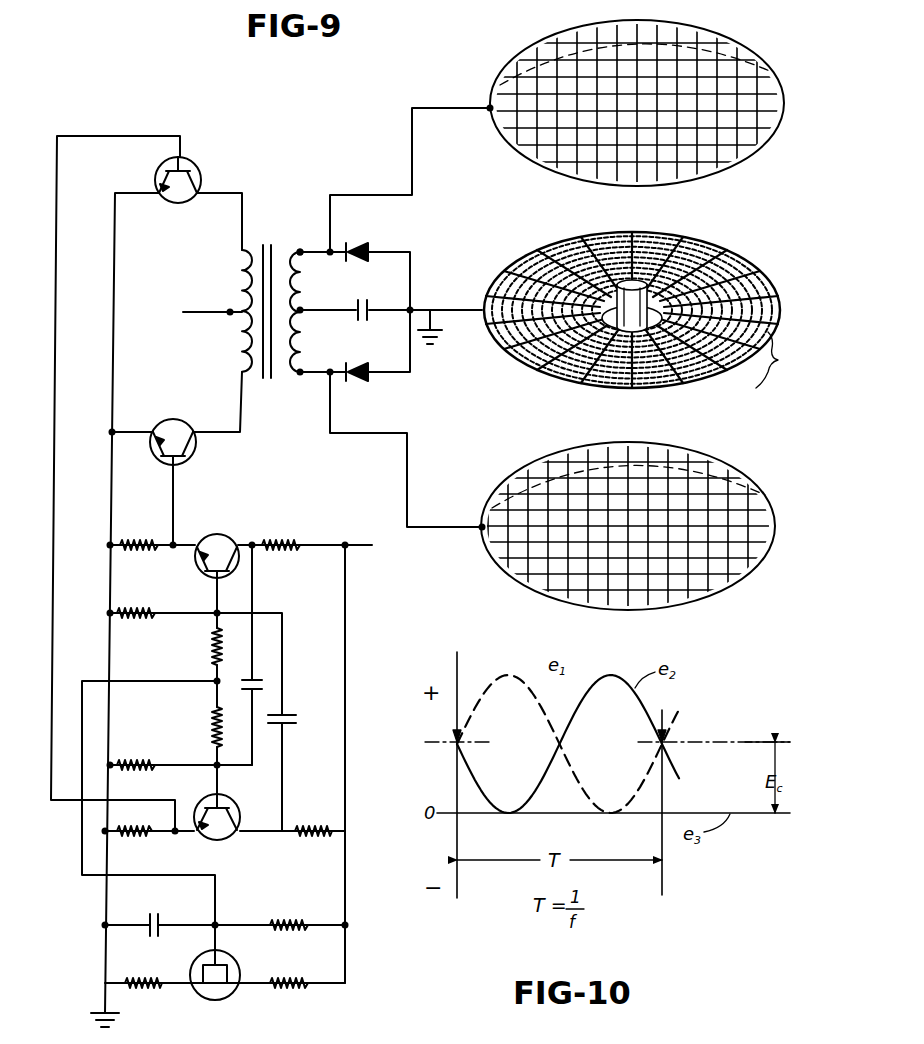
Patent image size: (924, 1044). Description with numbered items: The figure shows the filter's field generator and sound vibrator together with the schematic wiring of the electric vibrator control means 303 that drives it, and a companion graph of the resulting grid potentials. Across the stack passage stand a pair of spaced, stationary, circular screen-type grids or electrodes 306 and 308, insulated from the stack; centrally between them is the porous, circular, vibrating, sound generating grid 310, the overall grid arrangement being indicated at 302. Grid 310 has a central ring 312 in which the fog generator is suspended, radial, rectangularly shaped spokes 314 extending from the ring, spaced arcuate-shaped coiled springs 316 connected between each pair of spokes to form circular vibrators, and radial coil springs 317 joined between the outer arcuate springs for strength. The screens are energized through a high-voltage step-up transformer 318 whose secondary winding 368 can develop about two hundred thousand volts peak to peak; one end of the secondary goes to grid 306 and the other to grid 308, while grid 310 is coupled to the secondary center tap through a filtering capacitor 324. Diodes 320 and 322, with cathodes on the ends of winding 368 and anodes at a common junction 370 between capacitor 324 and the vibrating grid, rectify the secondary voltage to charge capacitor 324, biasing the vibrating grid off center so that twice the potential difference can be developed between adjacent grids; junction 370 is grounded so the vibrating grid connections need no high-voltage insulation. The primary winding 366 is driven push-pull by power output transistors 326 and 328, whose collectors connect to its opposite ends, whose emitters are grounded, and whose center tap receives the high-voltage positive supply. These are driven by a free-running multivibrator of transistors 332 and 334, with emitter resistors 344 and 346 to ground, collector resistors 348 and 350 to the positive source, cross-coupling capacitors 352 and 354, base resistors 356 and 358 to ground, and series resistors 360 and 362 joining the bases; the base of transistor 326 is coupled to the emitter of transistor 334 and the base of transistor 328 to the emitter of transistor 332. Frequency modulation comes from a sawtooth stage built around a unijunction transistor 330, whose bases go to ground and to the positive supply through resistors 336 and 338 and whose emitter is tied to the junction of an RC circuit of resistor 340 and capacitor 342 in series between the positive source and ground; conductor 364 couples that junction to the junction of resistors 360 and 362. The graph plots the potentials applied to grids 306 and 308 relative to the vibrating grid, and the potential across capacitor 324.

The electrode assembly 302 is at (789, 173).
The electric vibrator control means 303 is at (290, 178).
The stationary outer screen-type grid 306 is at (713, 32).
The stationary outer screen-type grid 308 is at (720, 458).
The vibrating sound generating grid 310 is at (651, 310).
The central ring 312 is at (690, 252).
The radial spokes 314 is at (530, 266).
The arcuate-shaped coiled springs 316 is at (778, 360).
The radial coil springs 317 is at (572, 378).
The transformer 318 is at (292, 248).
The diode 320 is at (368, 243).
The diode 322 is at (351, 388).
The filtering capacitor 324 is at (357, 308).
The push-pull transistor 326 is at (196, 450).
The push-pull transistor 328 is at (200, 178).
The unijunction transistor 330 is at (220, 1000).
The NPN transistor 332 is at (240, 810).
The NPN transistor 334 is at (239, 560).
The resistor 336 is at (174, 972).
The resistor 338 is at (312, 972).
The resistor 340 is at (320, 916).
The capacitor 342 is at (184, 897).
The resistor 344 is at (138, 838).
The resistor 346 is at (134, 560).
The resistor 348 is at (304, 838).
The resistor 350 is at (285, 542).
The cross-coupling capacitor 352 is at (258, 683).
The cross-coupling capacitor 354 is at (282, 717).
The resistor 356 is at (128, 764).
The resistor 358 is at (138, 626).
The series resistor 360 is at (212, 722).
The series resistor 362 is at (212, 660).
The conductor 364 is at (80, 850).
The primary winding 366 is at (240, 348).
The secondary winding 368 is at (300, 330).
The common junction 370 is at (420, 310).